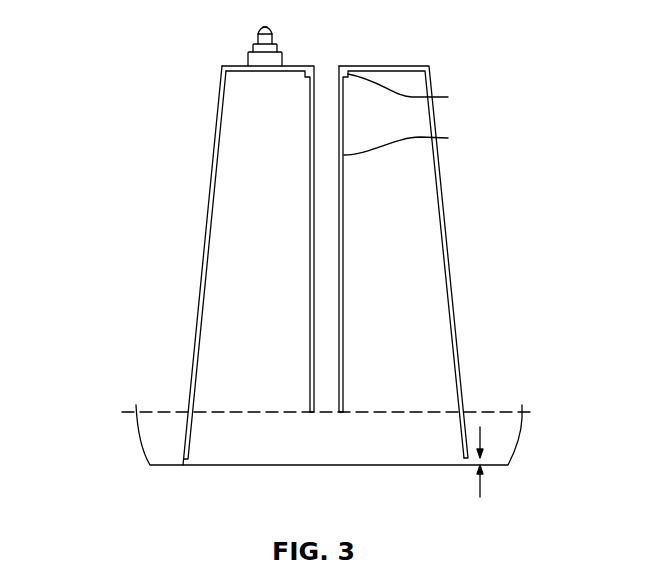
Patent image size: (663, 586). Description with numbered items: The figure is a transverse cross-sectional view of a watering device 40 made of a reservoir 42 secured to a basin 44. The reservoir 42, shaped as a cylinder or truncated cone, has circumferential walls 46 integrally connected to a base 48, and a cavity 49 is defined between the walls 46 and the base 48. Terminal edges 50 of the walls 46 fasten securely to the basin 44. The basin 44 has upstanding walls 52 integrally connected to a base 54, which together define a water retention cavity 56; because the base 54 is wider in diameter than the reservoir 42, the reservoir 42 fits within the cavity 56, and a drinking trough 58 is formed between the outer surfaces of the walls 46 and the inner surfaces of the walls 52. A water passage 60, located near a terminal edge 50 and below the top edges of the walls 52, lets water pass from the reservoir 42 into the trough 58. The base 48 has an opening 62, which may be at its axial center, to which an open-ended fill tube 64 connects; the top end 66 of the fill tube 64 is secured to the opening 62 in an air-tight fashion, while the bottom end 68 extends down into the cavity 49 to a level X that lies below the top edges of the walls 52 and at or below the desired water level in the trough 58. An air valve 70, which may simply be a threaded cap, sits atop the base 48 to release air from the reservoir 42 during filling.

The watering device 40 is at (100, 85).
The reservoir 42 is at (447, 232).
The basin 44 is at (498, 465).
The circumferential walls 46 is at (207, 207).
The base 48 is at (372, 66).
The cavity 49 is at (390, 317).
The terminal edges 50 is at (183, 465).
The upstanding walls 52 is at (137, 430).
The base 54 is at (225, 467).
The water retention cavity 56 is at (168, 423).
The drinking trough 58 is at (505, 418).
The water passage 60 is at (481, 437).
The opening 62 is at (323, 71).
The fill tube 64 is at (412, 140).
The top end 66 is at (414, 92).
The bottom end 68 is at (345, 407).
The air valve 70 is at (253, 58).
The level X is at (273, 412).